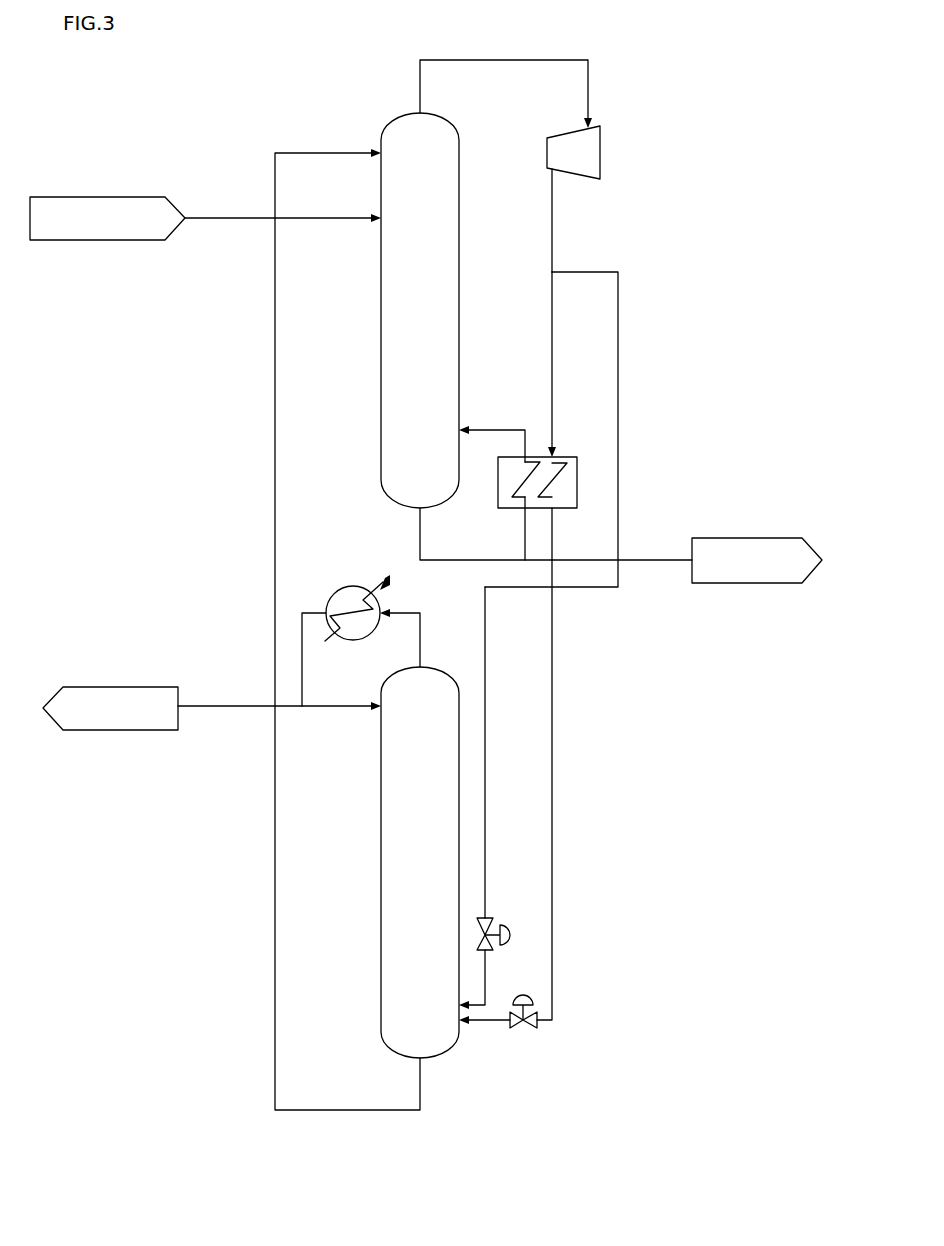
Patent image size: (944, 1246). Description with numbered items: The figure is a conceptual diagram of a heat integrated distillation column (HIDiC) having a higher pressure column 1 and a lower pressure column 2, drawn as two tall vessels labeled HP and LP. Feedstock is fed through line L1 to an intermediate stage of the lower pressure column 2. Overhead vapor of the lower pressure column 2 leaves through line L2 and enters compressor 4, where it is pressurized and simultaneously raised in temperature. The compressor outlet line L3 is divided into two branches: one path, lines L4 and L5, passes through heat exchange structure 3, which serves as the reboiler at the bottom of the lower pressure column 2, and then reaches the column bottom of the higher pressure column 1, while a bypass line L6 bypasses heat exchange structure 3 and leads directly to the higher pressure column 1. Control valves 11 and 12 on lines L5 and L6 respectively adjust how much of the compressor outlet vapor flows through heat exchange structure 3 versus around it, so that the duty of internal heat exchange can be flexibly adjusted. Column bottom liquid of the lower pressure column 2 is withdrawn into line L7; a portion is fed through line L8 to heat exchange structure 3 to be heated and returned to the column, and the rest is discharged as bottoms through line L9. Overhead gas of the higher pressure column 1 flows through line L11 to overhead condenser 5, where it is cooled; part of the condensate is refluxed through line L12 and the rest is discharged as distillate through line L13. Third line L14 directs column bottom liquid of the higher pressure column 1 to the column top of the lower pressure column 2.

The higher pressure column 1 is at (424, 818).
The lower pressure column 2 is at (424, 268).
The heat exchange structure 3 is at (572, 456).
The compressor 4 is at (580, 168).
The overhead condenser 5 is at (330, 600).
The control valve 11 is at (518, 1033).
The control valve 12 is at (506, 915).
The feedstock line L1 is at (210, 215).
The overhead vapor line L2 is at (409, 68).
The compressor outlet line L3 is at (555, 222).
The heat exchange inlet line L4 is at (545, 300).
The heat exchange outlet line L5 is at (553, 738).
The bypass line L6 is at (623, 300).
The column bottom liquid withdrawal line L7 is at (410, 538).
The reboiler feed line L8 is at (514, 538).
The bottoms line L9 is at (655, 567).
The overhead gas line L11 is at (421, 661).
The reflux line L12 is at (320, 712).
The distillate line L13 is at (200, 712).
The third line L14 is at (264, 1078).